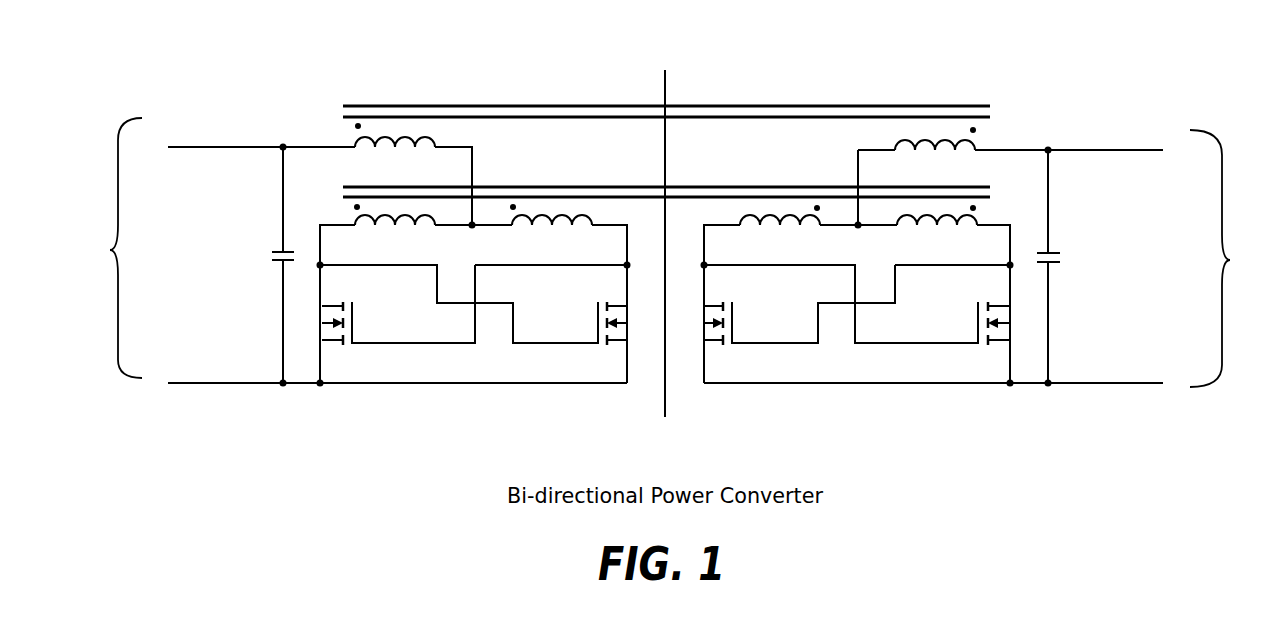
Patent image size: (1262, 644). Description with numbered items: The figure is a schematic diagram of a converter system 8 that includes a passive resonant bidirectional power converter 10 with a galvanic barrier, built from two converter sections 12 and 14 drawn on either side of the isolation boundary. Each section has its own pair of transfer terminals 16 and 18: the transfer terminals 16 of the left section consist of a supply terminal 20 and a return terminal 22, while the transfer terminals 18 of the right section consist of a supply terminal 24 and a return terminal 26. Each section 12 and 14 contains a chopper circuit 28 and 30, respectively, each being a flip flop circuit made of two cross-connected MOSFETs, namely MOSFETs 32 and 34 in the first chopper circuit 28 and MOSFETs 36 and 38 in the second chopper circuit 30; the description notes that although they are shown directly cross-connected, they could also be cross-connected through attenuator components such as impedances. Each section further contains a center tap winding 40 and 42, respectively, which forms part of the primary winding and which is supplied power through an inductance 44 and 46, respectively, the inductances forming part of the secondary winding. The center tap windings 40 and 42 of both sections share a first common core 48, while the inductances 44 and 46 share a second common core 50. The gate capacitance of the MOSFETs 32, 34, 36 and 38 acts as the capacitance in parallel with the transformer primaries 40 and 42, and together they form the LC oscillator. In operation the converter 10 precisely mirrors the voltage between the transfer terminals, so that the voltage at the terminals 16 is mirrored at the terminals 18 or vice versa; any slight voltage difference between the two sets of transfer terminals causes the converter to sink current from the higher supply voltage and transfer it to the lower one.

The converter system 8 is at (1056, 51).
The bidirectional power converter 10 is at (693, 55).
The converter section 12 is at (388, 70).
The converter section 14 is at (885, 65).
The transfer terminals 16 is at (111, 248).
The transfer terminals 18 is at (1222, 258).
The supply terminal 20 is at (197, 148).
The return terminal 22 is at (200, 384).
The supply terminal 24 is at (1092, 151).
The return terminal 26 is at (1090, 384).
The chopper circuit 28 is at (474, 367).
The chopper circuit 30 is at (857, 370).
The MOSFET 32 is at (353, 325).
The MOSFET 34 is at (597, 328).
The MOSFET 36 is at (733, 327).
The MOSFET 38 is at (977, 328).
The center tap winding 40 is at (455, 228).
The center tap winding 42 is at (860, 229).
The inductance 44 is at (390, 151).
The inductance 46 is at (930, 152).
The first common core 48 is at (510, 185).
The second common core 50 is at (538, 106).